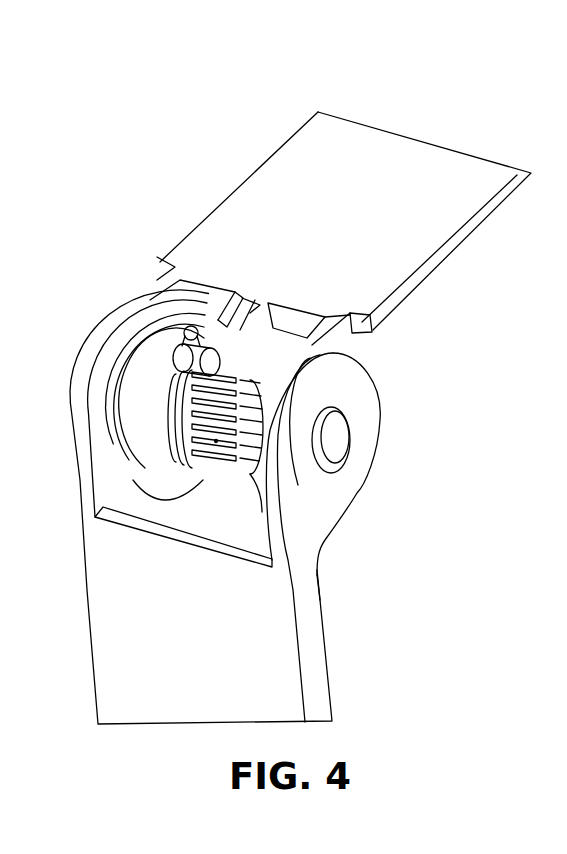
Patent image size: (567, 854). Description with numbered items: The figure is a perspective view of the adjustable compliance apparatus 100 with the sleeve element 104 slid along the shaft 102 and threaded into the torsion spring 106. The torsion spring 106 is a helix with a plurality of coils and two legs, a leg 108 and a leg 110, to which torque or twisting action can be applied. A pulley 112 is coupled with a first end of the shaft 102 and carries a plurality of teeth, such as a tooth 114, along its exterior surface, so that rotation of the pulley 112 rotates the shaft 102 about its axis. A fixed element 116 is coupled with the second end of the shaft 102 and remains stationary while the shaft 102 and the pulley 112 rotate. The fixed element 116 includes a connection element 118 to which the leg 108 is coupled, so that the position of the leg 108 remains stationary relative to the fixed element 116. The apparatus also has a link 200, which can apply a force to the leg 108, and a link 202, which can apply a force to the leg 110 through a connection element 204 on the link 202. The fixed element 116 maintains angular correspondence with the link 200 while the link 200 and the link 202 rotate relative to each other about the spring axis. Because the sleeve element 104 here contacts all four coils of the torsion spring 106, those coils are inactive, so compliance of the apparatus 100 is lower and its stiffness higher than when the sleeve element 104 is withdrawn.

The adjustable compliance apparatus 100 is at (351, 78).
The shaft 102 is at (217, 442).
The sleeve element 104 is at (197, 405).
The torsion spring 106 is at (180, 438).
The leg 108 is at (202, 352).
The leg 110 is at (207, 364).
The pulley 112 is at (243, 418).
The tooth 114 is at (253, 398).
The fixed element 116 is at (155, 350).
The connection element 118 is at (157, 352).
The link 200 is at (242, 632).
The link 202 is at (451, 163).
The connection element 204 is at (222, 356).